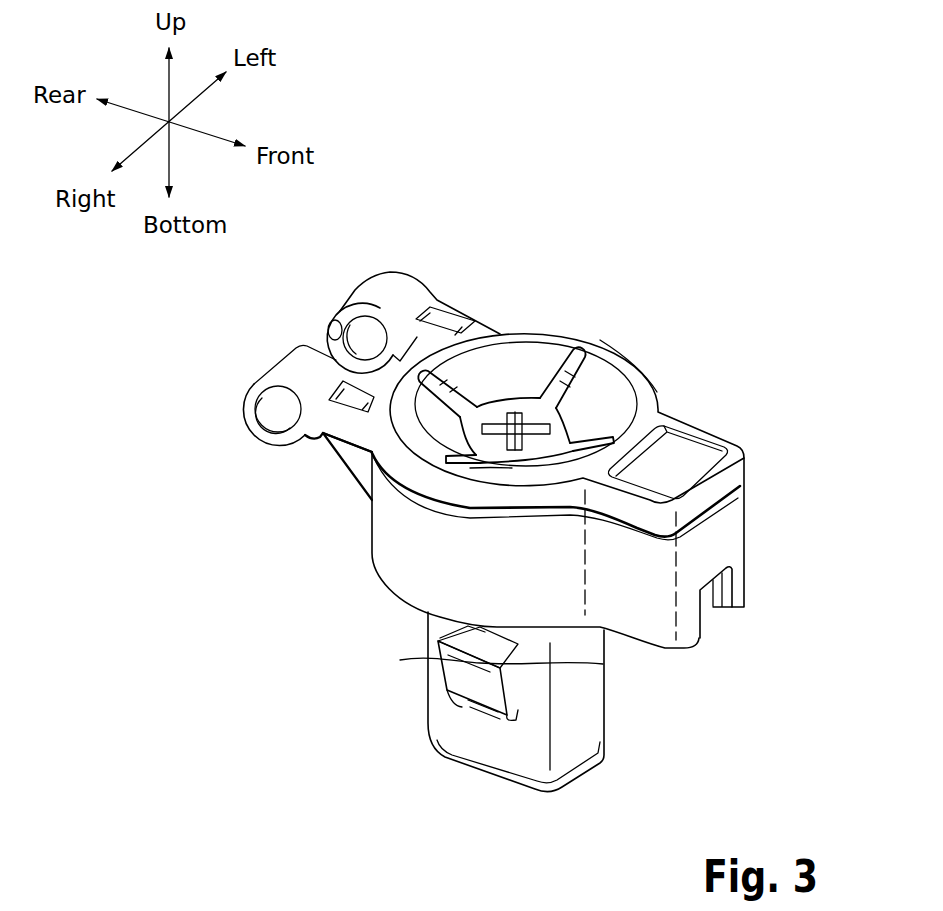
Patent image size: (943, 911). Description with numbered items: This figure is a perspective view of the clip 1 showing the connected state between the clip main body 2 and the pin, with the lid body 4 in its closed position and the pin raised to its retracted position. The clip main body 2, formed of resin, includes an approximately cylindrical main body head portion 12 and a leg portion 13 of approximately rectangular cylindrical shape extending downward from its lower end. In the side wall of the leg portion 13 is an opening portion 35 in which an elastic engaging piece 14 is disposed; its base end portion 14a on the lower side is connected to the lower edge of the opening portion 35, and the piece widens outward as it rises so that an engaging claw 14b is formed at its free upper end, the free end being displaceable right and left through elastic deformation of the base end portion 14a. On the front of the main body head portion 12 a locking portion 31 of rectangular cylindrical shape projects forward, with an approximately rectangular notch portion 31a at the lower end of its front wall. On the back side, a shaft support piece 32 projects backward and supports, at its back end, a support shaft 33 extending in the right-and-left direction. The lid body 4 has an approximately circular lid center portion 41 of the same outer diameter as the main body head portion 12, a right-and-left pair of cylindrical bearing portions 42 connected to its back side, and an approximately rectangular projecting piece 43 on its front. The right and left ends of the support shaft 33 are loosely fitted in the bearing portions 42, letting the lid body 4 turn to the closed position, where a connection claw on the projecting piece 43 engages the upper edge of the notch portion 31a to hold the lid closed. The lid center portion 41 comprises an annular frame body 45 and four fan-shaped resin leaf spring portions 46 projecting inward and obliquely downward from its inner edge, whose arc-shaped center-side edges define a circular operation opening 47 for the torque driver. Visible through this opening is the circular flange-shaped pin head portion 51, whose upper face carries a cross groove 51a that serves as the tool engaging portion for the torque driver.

The clip 1 is at (733, 225).
The clip main body 2 is at (727, 688).
The lid body 4 is at (656, 342).
The main body head portion 12 is at (386, 593).
The leg portion 13 is at (610, 703).
The elastic engaging piece 14 is at (516, 680).
The base end portion 14a is at (477, 714).
The engaging claw 14b is at (445, 645).
The locking portion 31 is at (749, 521).
The notch portion 31a is at (724, 590).
The shaft support piece 32 is at (350, 455).
The support shaft 33 is at (276, 422).
The opening portion 35 is at (603, 664).
The lid center portion 41 is at (601, 333).
The bearing portions 42 is at (378, 288).
The projecting piece 43 is at (703, 437).
The annular frame body 45 is at (646, 394).
The leaf spring portions 46 is at (513, 380).
The operation opening 47 is at (477, 410).
The pin head portion 51 is at (545, 417).
The cross groove 51a is at (517, 413).